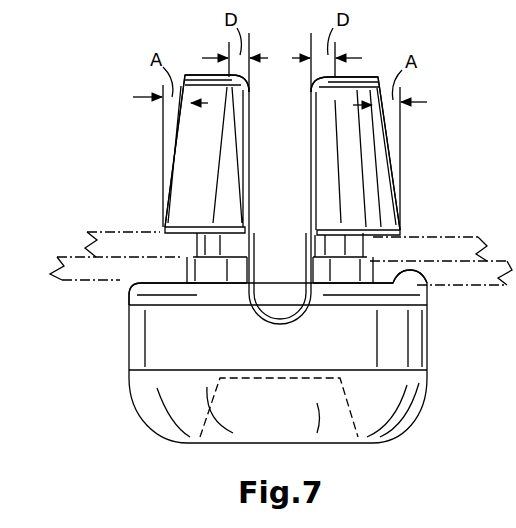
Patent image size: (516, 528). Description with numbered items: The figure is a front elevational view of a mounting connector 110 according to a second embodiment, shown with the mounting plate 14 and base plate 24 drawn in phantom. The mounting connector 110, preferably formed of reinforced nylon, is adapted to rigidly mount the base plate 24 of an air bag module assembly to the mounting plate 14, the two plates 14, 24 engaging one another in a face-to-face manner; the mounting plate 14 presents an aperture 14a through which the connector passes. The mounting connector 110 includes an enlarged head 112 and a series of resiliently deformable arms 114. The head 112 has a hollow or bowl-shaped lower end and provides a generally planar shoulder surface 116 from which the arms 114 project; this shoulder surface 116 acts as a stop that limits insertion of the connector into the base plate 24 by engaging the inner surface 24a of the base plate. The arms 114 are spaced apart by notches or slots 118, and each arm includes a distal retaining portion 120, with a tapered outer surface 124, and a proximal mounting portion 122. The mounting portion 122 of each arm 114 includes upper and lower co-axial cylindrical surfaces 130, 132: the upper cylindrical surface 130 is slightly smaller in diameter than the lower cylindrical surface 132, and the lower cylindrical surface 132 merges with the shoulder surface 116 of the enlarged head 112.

The mounting plate 14 is at (87, 233).
The aperture in first panel 14a is at (137, 230).
The base plate 24 is at (118, 270).
The inner surface of the base plate 24a is at (62, 283).
The mounting connector 110 is at (116, 389).
The enlarged head 112 is at (383, 405).
The resiliently deformable arms 114 is at (207, 177).
The shoulder surface 116 is at (417, 284).
The slots 118 is at (277, 285).
The distal retaining portion 120 is at (207, 155).
The proximal mounting portion 122 is at (158, 269).
The tapered outer surface 124 is at (177, 136).
The upper cylindrical surface 130 is at (220, 243).
The lower cylindrical surface 132 is at (228, 268).